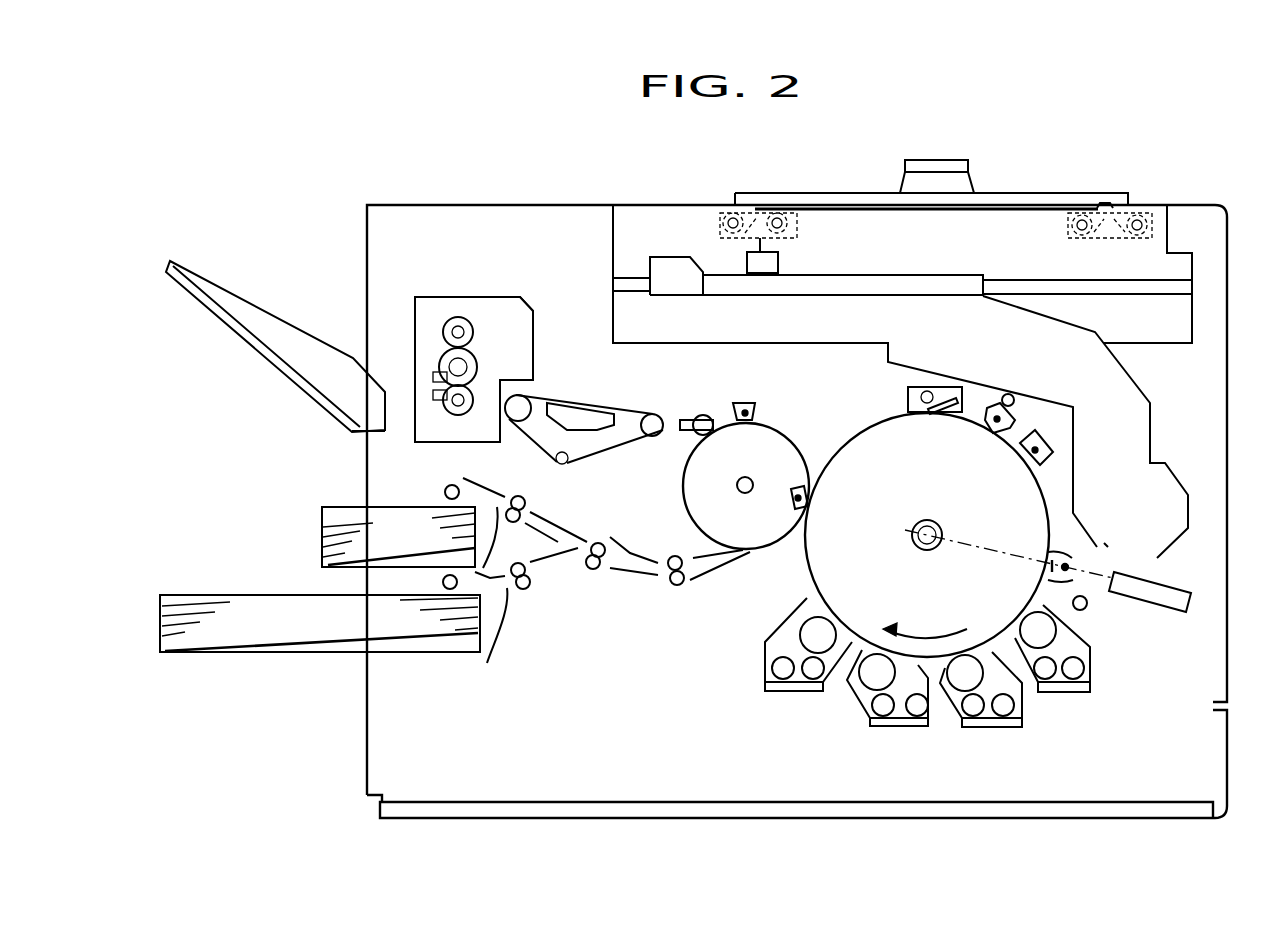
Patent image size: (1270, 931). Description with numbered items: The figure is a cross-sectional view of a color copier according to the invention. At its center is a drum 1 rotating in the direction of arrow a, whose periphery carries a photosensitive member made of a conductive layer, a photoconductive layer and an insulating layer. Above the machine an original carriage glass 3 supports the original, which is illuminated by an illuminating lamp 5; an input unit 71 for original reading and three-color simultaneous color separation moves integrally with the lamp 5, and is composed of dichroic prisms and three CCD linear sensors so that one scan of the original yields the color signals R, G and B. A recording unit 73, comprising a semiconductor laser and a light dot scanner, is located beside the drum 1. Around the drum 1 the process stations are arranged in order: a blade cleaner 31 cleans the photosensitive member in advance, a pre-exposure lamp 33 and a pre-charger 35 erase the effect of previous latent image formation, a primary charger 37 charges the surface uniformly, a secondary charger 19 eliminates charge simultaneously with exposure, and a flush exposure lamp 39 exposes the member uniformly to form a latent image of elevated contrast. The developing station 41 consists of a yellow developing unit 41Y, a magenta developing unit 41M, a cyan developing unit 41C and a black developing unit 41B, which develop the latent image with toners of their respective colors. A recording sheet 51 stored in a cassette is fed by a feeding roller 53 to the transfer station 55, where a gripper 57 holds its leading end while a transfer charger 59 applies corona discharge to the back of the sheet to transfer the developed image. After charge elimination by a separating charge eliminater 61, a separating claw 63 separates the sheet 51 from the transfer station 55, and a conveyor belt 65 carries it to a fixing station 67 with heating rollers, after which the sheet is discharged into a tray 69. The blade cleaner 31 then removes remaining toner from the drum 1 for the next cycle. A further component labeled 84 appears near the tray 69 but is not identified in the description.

The drum 1 is at (843, 451).
The original carriage glass 3 is at (947, 207).
The illuminating lamp 5 is at (796, 220).
The secondary charger 19 is at (1060, 556).
The blade cleaner 31 is at (908, 403).
The pre-exposure lamp 33 is at (1015, 402).
The pre-charger 35 is at (985, 410).
The primary charger 37 is at (1035, 466).
The flush exposure lamp 39 is at (1088, 608).
The developing station 41 is at (934, 694).
The black developing unit 41B is at (798, 678).
The cyan developing unit 41C is at (897, 713).
The magenta developing unit 41M is at (988, 712).
The yellow developing unit 41Y is at (1062, 680).
The recording sheet 51 is at (331, 507).
The feeding roller 53 is at (446, 489).
The transfer station 55 is at (681, 497).
The gripper 57 is at (750, 549).
The transfer charger 59 is at (790, 504).
The separating charge eliminater 61 is at (745, 403).
The separating claw 63 is at (699, 417).
The conveyor belt 65 is at (565, 401).
The fixing station 67 is at (521, 308).
The tray 69 is at (258, 352).
The input unit 71 is at (779, 259).
The recording unit 73 is at (1160, 618).
The discharge roller 84 is at (379, 373).